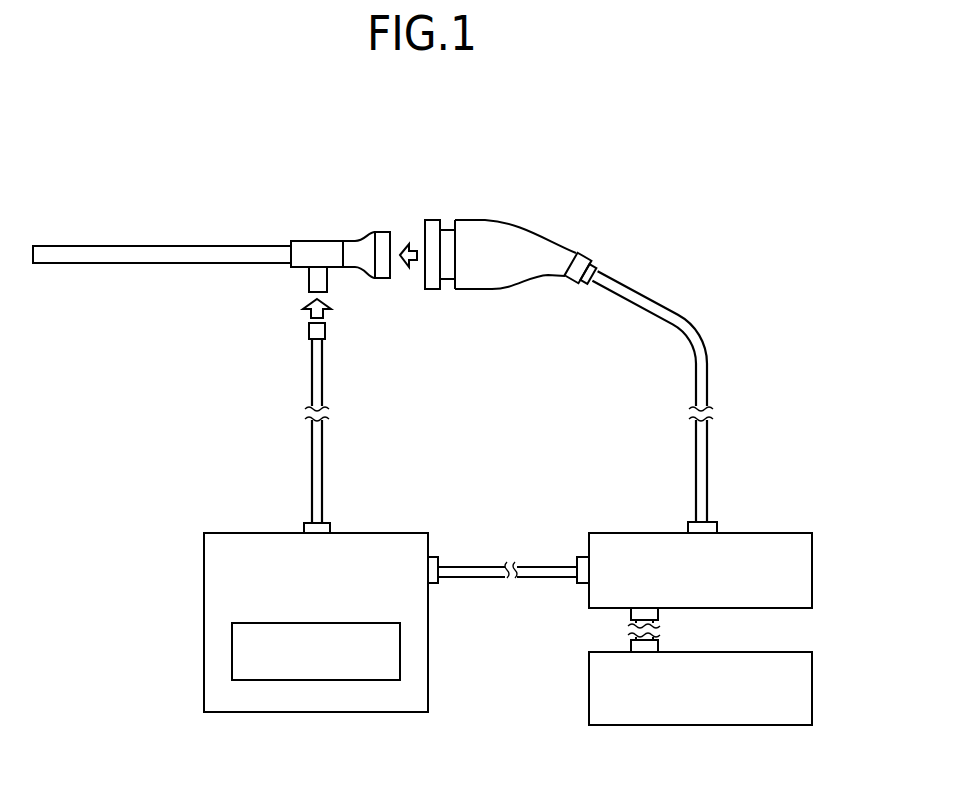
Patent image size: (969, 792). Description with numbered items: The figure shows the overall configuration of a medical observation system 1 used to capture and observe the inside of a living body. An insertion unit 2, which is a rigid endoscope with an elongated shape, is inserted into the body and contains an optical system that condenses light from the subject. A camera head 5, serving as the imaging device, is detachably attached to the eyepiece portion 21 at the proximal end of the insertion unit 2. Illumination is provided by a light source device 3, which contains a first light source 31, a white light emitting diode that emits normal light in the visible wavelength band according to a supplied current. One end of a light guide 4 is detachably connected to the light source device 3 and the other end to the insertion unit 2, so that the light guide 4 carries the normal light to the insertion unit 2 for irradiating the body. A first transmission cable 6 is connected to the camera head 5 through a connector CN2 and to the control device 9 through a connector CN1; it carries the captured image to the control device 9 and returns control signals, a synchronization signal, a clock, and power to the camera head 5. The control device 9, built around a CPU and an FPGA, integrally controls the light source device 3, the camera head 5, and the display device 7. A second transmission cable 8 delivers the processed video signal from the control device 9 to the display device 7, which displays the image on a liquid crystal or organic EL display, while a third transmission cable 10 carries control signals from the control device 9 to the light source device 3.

The medical observation system 1 is at (660, 163).
The insertion unit 2 is at (240, 253).
The eyepiece portion 21 is at (383, 240).
The camera head 5 is at (477, 238).
The connector CN2 is at (587, 282).
The first transmission cable 6 is at (703, 372).
The connector CN1 is at (712, 522).
The control device 9 is at (767, 511).
The third transmission cable 10 is at (551, 560).
The second transmission cable 8 is at (632, 637).
The display device 7 is at (763, 652).
The light source device 3 is at (372, 533).
The first light source 31 is at (343, 623).
The light guide 4 is at (310, 474).